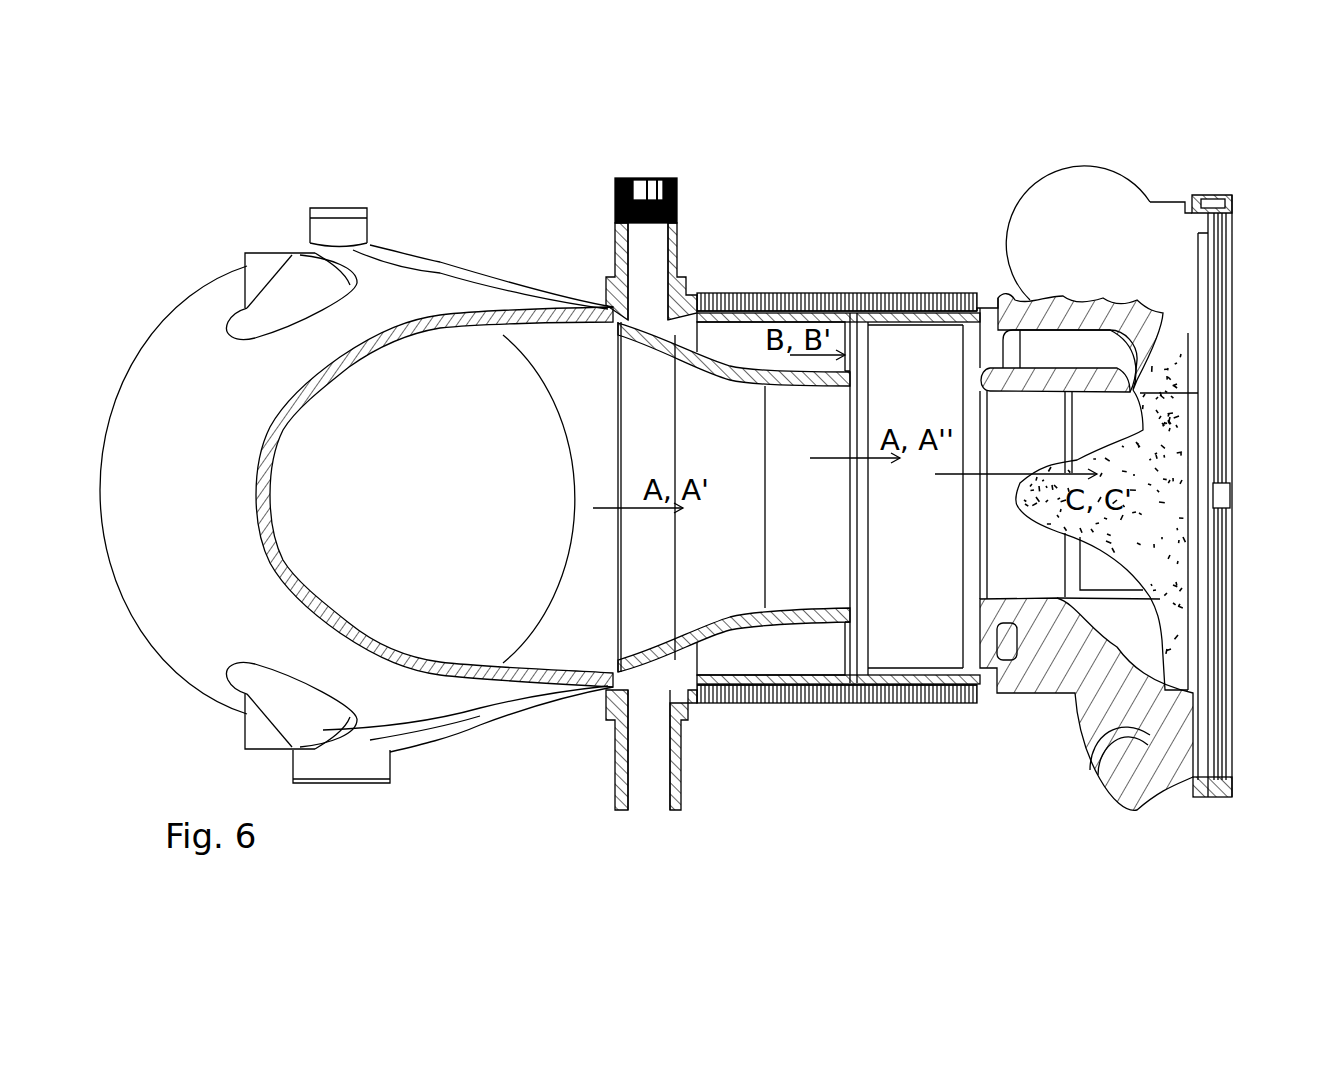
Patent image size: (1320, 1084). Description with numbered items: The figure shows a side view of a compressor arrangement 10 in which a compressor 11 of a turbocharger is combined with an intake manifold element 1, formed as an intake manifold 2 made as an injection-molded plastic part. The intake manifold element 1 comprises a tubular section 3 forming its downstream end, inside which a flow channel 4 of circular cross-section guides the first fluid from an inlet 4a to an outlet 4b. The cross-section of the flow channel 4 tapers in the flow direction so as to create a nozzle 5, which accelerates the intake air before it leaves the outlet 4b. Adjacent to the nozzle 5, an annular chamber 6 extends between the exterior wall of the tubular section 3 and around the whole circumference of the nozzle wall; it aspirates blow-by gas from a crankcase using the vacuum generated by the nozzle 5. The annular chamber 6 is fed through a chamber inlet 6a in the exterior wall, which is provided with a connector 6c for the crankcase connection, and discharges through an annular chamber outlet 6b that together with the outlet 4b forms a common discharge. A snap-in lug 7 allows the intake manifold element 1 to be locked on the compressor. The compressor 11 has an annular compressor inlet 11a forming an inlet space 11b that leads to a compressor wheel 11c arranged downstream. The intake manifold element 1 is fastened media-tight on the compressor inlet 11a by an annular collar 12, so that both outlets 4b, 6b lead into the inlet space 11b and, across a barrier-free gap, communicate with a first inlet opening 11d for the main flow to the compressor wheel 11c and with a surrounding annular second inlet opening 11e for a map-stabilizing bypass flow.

The intake manifold element 1 is at (740, 215).
The intake manifold 2 is at (214, 421).
The tubular section 3 is at (799, 447).
The flow channel 4 is at (709, 559).
The inlet 4a is at (617, 600).
The outlet 4b is at (847, 563).
The nozzle 5 is at (657, 434).
The annular chamber 6 is at (737, 359).
The chamber inlet 6a is at (640, 317).
The annular chamber outlet 6b is at (843, 642).
The connector 6c is at (615, 215).
The snap-in lug 7 is at (819, 290).
The compressor arrangement 10 is at (890, 172).
The compressor 11 is at (1035, 165).
The compressor inlet 11a is at (893, 300).
The inlet space 11b is at (940, 392).
The compressor wheel 11c is at (1148, 397).
The first inlet opening 11d is at (980, 555).
The second inlet opening 11e is at (987, 347).
The annular collar 12 is at (760, 295).